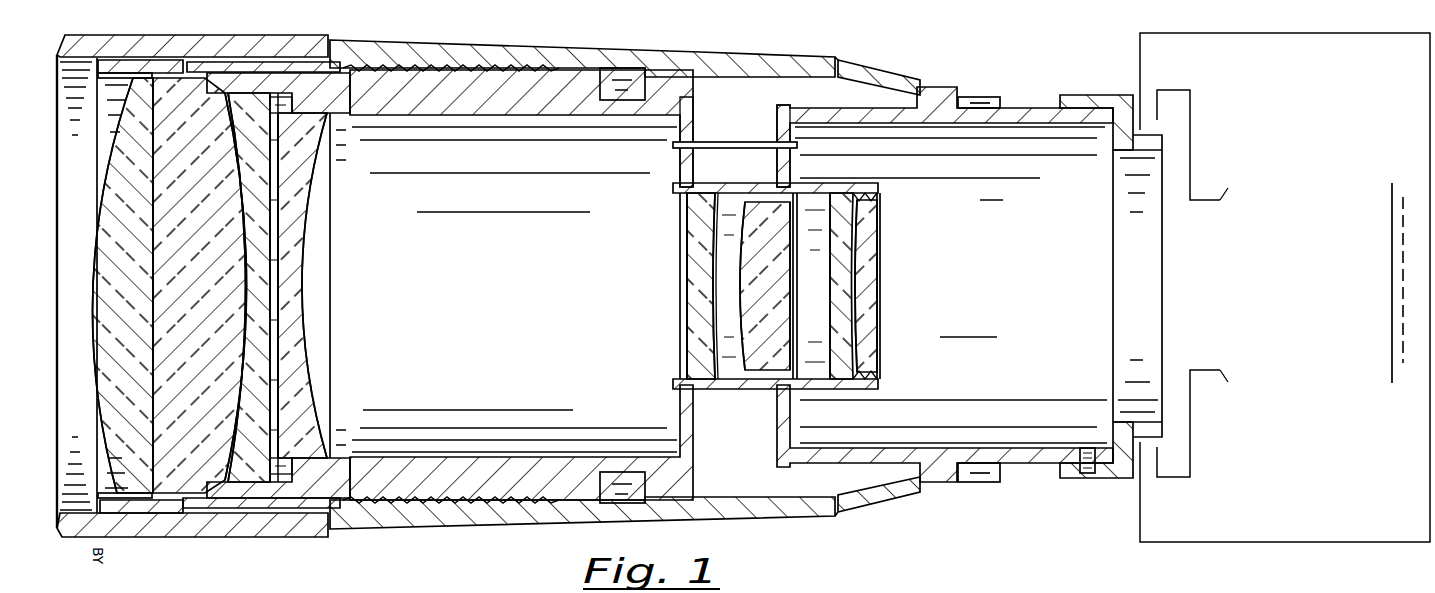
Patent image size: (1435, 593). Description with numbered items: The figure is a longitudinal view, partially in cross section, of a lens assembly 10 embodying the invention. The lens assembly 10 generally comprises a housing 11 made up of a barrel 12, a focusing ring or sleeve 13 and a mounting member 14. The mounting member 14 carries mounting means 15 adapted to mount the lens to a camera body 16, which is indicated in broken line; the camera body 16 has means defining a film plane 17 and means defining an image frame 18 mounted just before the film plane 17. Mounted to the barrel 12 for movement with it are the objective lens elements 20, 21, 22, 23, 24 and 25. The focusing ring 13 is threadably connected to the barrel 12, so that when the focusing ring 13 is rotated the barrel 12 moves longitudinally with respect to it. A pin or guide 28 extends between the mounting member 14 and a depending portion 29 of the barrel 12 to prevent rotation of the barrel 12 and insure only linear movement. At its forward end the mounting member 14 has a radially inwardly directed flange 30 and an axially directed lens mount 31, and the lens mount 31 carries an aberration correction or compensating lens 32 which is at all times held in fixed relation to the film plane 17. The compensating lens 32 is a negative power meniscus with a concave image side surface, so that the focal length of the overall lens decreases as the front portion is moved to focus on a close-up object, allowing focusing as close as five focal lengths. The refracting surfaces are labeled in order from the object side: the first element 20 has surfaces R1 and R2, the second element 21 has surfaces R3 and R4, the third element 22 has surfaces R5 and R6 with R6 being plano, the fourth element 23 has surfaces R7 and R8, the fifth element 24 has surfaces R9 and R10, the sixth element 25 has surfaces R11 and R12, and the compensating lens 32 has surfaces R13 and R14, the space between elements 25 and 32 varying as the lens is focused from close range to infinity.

The lens assembly 10 is at (488, 305).
The housing 11 is at (566, 306).
The barrel 12 is at (536, 100).
The focusing ring 13 is at (718, 55).
The mounting member 14 is at (1035, 113).
The mounting means 15 is at (1092, 102).
The camera body 16 is at (1303, 545).
The film plane 17 is at (1403, 355).
The image frame 18 is at (1392, 236).
The objective lens element 20 is at (122, 333).
The objective lens element 21 is at (224, 425).
The objective lens element 22 is at (262, 400).
The objective lens element 23 is at (232, 385).
The objective lens element 24 is at (700, 342).
The objective lens element 25 is at (763, 333).
The pin 28 is at (767, 150).
The depending portion 29 is at (683, 163).
The radially inwardly directed flange 30 is at (783, 163).
The lens mount 31 is at (848, 377).
The compensating lens 32 is at (838, 333).
The lens surface R1 is at (97, 225).
The lens surface R2 is at (153, 228).
The lens surface R3 is at (232, 410).
The lens surface R4 is at (270, 392).
The lens surface R5 is at (279, 205).
The lens surface R6 is at (305, 237).
The lens surface R7 is at (300, 272).
The lens surface R8 is at (303, 290).
The lens surface R9 is at (690, 310).
The lens surface R10 is at (715, 247).
The lens surface R11 is at (745, 277).
The lens surface R12 is at (795, 228).
The lens surface R13 is at (833, 263).
The lens surface R14 is at (856, 302).